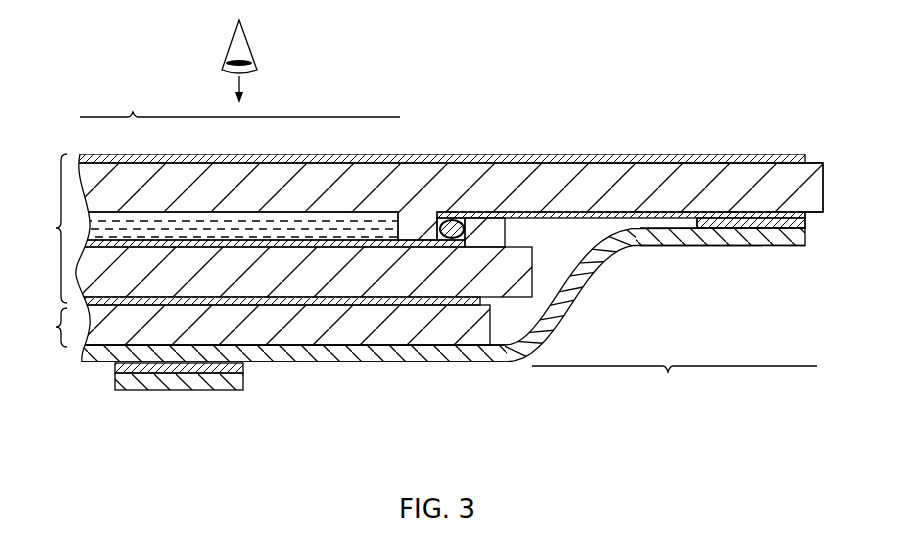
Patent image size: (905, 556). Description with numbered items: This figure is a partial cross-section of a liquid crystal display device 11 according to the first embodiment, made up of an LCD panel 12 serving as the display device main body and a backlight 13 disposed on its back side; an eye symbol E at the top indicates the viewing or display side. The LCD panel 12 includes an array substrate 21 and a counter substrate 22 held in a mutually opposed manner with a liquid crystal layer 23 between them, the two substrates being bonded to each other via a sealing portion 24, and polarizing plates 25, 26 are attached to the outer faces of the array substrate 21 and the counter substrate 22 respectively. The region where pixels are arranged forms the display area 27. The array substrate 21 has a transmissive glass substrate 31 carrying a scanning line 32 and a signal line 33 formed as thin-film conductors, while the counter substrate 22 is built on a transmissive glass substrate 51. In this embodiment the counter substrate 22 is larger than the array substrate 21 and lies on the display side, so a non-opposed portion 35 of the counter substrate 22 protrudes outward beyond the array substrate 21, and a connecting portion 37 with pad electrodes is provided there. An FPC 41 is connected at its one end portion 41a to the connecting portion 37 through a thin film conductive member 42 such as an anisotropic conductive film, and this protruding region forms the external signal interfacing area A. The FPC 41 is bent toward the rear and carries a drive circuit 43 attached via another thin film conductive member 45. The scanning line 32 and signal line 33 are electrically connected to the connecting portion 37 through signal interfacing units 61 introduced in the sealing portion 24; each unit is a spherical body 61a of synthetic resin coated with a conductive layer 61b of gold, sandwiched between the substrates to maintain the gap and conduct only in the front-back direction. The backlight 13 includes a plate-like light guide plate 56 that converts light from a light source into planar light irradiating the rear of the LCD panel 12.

The liquid crystal display device 11 is at (638, 100).
The LCD panel 12 is at (50, 228).
The backlight 13 is at (50, 327).
The array substrate 21 is at (297, 286).
The counter substrate 22 is at (418, 172).
The liquid crystal layer 23 is at (177, 228).
The sealing portion 24 is at (490, 235).
The polarizing plate 25 is at (372, 300).
The polarizing plate 26 is at (568, 213).
The display area 27 is at (240, 104).
The glass substrate 31 is at (328, 285).
The scanning line 32 is at (267, 185).
The signal line 33 is at (343, 243).
The non-opposed portion 35 is at (710, 222).
The connecting portion 37 is at (740, 213).
The FPC 41 is at (437, 294).
The one end portion 41a is at (751, 242).
The thin film conductive member 42 is at (787, 229).
The drive circuit 43 is at (170, 386).
The thin film conductive member 45 is at (216, 371).
The glass substrate 51 is at (645, 180).
The light guide plate 56 is at (427, 330).
The signal interfacing unit 61 is at (466, 166).
The spherical body 61a is at (470, 222).
The conductive layer 61b is at (450, 216).
The external signal interfacing area A is at (674, 381).
The viewer eye E is at (252, 43).